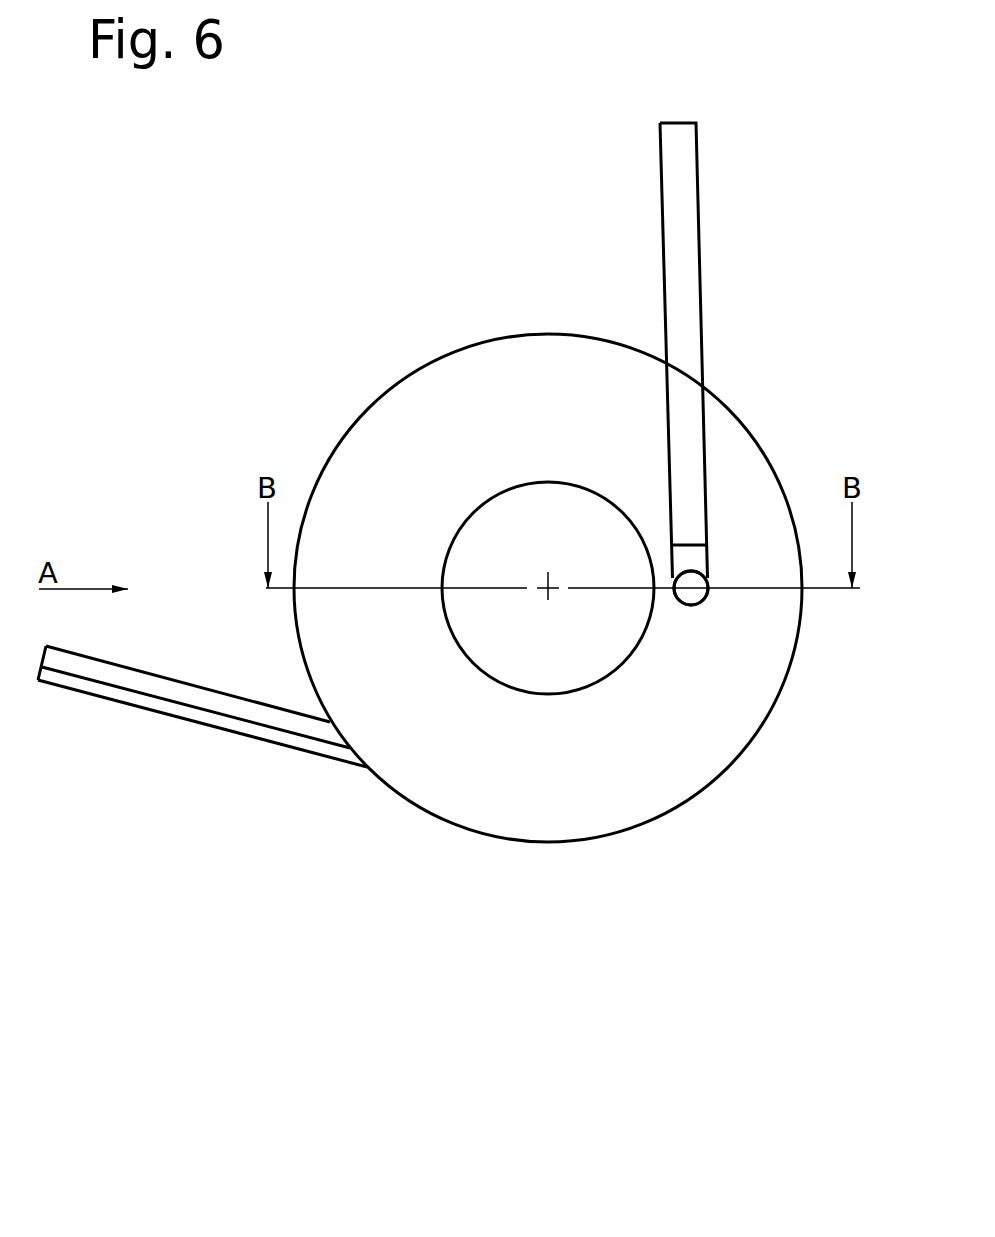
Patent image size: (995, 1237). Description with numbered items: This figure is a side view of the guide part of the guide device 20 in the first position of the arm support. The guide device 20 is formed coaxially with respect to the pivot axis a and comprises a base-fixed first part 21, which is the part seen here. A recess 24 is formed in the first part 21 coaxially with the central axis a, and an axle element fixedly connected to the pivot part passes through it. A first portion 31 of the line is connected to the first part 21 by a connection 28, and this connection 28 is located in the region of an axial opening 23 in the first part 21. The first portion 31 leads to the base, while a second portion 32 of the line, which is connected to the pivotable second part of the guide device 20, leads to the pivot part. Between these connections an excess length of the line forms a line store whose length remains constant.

The guide device 20 is at (548, 696).
The first part 21 is at (658, 788).
The axial opening 23 is at (712, 577).
The recess 24 is at (525, 665).
The connection 28 is at (708, 605).
The first portion 31 is at (663, 181).
The second portion 32 is at (210, 715).
The pivot axis a is at (543, 582).